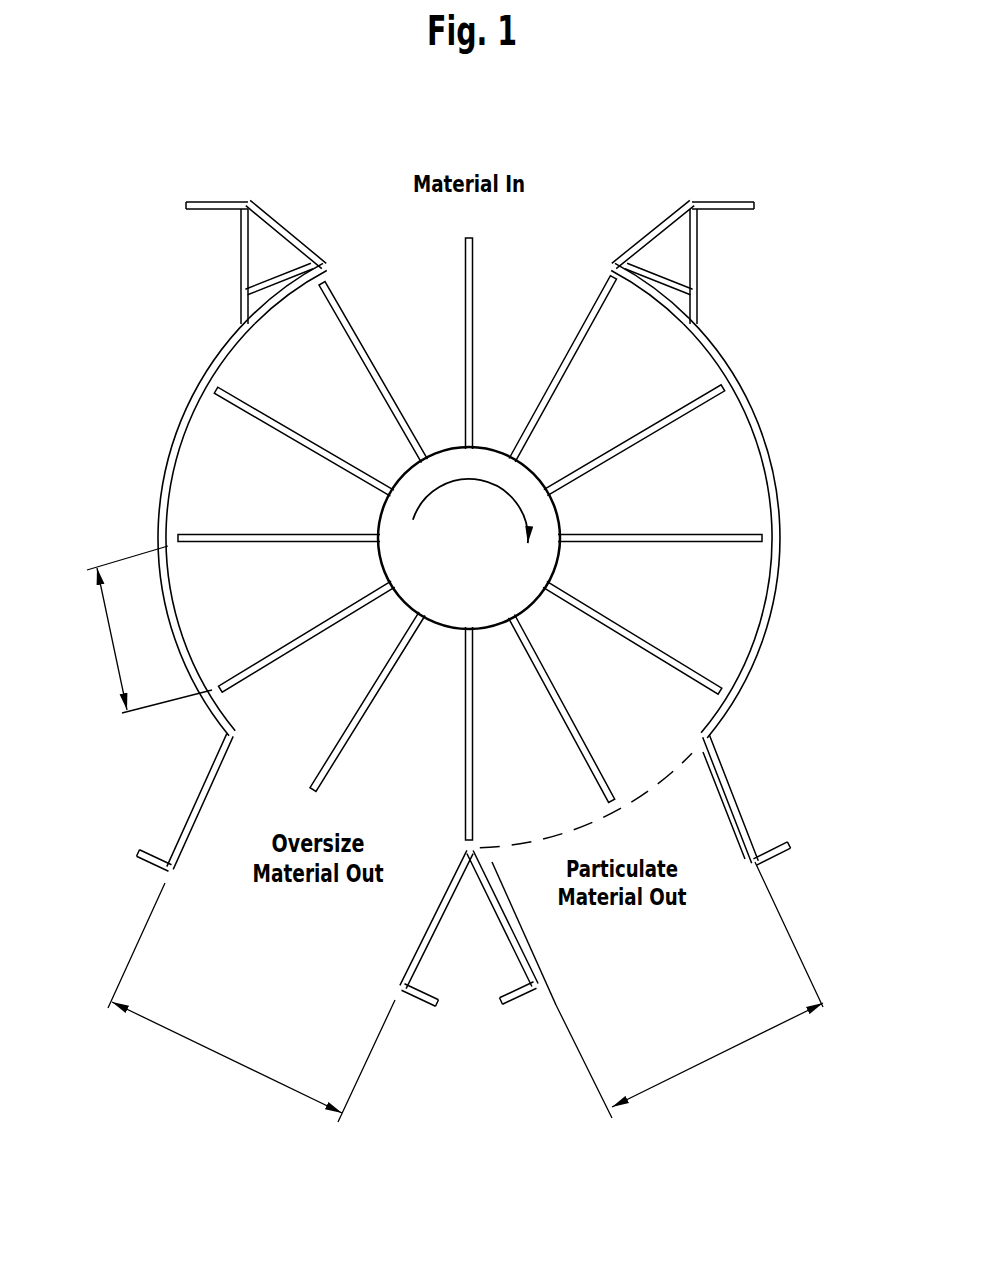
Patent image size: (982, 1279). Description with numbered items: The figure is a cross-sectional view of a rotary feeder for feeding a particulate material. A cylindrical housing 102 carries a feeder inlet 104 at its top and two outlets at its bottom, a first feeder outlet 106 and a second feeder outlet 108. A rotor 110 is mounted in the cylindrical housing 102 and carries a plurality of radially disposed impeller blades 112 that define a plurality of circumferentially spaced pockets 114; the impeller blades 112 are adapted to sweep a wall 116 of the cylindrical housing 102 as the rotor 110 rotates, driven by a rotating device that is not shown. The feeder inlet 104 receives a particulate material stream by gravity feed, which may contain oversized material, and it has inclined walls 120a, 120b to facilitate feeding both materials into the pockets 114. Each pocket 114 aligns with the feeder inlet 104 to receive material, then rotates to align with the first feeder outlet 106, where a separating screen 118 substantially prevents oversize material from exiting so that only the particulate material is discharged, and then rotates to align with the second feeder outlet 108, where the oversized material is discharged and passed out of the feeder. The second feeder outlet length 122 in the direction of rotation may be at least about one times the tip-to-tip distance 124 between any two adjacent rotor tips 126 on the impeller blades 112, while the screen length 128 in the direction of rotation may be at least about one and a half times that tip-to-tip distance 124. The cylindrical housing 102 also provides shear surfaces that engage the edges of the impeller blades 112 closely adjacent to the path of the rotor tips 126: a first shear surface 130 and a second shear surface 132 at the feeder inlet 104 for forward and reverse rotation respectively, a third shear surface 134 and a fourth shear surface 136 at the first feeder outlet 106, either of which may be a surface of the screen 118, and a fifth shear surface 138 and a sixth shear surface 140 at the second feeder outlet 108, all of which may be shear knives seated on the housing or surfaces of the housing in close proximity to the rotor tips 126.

The cylindrical housing 102 is at (249, 479).
The feeder inlet 104 is at (486, 150).
The first feeder outlet 106 is at (643, 937).
The second feeder outlet 108 is at (301, 926).
The rotor 110 is at (558, 564).
The impeller blades 112 is at (360, 748).
The circumferentially spaced pockets 114 is at (690, 480).
The wall 116 is at (770, 580).
The separating screen 118 is at (620, 798).
The inclined wall 120a is at (680, 212).
The inclined wall 120b is at (268, 212).
The second feeder outlet length 122 is at (225, 1057).
The tip-to-tip distance 124 is at (110, 640).
The rotor tips 126 is at (722, 390).
The screen length 128 is at (713, 1058).
The first shear surface 130 is at (614, 266).
The second shear surface 132 is at (325, 268).
The third shear surface 134 is at (480, 840).
The fourth shear surface 136 is at (705, 736).
The fifth shear surface 138 is at (232, 736).
The sixth shear surface 140 is at (468, 850).